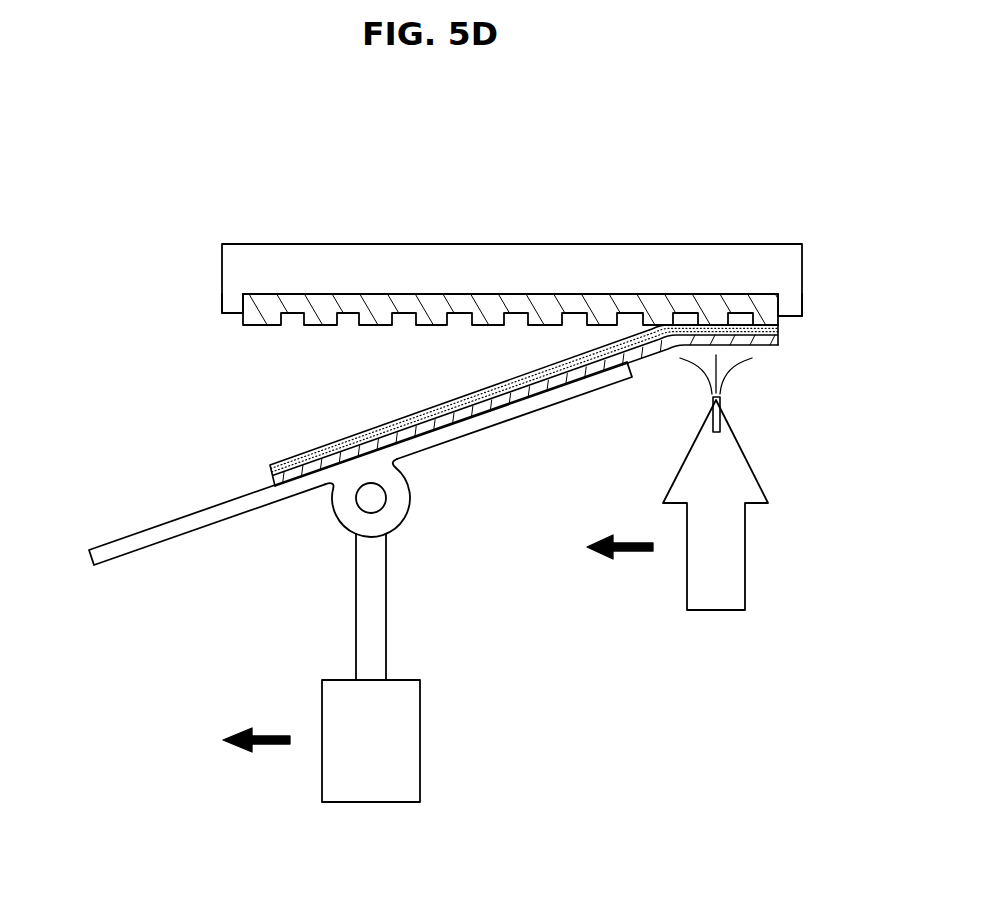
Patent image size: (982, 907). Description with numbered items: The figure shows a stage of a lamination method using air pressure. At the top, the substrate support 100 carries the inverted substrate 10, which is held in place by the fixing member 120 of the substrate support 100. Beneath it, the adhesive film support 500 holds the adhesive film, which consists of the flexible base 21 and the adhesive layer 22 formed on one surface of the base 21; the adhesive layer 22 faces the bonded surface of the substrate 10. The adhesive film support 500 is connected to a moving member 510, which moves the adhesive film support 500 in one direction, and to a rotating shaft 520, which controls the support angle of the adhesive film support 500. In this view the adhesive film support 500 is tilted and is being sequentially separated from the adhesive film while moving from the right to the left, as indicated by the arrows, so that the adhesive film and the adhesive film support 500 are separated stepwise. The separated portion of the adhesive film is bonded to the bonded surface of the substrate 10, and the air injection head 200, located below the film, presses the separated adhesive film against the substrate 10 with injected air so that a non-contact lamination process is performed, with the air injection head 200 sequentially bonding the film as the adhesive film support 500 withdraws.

The substrate support 100 is at (430, 260).
The fixing member 120 is at (233, 305).
The substrate 10 is at (600, 305).
The adhesive layer 22 is at (310, 450).
The base 21 is at (270, 483).
The adhesive film support 500 is at (123, 548).
The rotating shaft 520 is at (397, 508).
The moving member 510 is at (395, 732).
The air injection head 200 is at (727, 552).